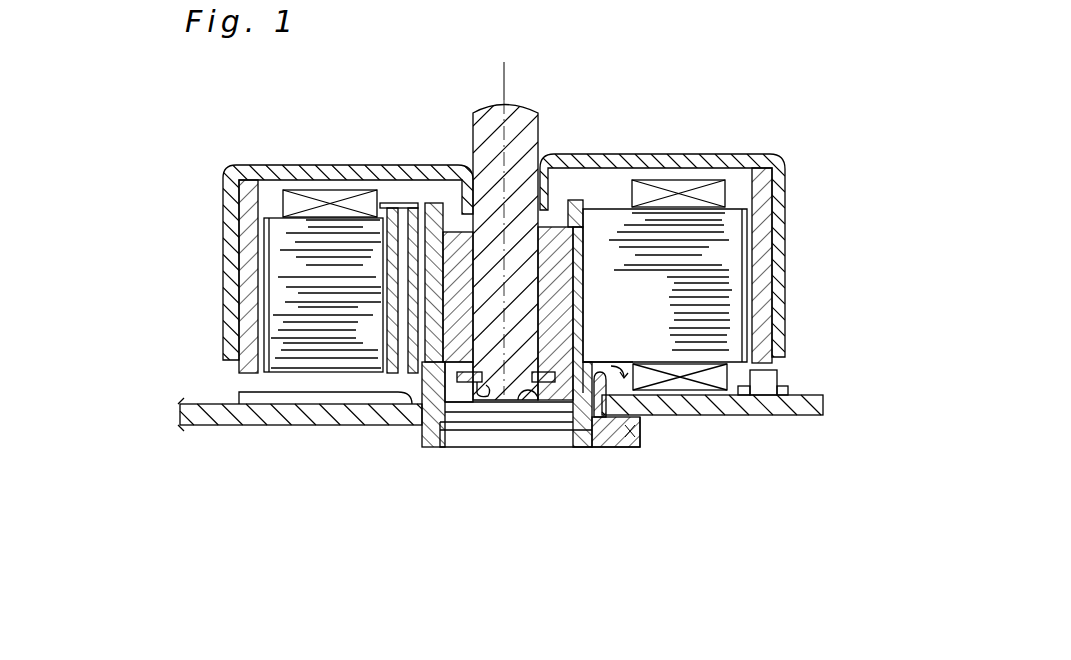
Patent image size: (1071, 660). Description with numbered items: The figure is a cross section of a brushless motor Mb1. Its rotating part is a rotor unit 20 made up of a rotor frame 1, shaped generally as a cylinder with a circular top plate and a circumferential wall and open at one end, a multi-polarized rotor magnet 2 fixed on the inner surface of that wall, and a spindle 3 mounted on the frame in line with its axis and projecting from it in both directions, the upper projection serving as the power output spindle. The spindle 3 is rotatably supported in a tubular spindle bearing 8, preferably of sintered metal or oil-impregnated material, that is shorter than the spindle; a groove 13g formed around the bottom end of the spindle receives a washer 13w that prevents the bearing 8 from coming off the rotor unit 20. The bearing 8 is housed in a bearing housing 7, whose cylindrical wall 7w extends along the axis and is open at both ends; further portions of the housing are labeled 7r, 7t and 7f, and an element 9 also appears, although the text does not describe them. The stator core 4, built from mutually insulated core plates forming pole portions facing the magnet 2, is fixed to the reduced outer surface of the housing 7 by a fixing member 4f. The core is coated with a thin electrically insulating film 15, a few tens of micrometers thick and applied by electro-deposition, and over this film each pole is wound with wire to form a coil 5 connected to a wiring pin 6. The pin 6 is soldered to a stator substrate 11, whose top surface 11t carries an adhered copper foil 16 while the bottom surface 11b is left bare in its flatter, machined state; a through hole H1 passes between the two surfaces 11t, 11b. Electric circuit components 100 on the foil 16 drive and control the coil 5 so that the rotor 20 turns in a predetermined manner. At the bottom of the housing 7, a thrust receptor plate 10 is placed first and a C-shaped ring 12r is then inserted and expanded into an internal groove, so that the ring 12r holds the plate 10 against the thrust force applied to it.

The rotor frame 1 is at (690, 154).
The multi-polarized magnet 2 is at (763, 154).
The spindle 3 is at (541, 113).
The stator core 4 is at (360, 240).
The fixing member 4f is at (413, 205).
The coil 5 is at (297, 196).
The wiring pin 6 is at (268, 402).
The bearing housing 7 is at (602, 437).
The engaging projection of bearing holder 7r is at (600, 365).
The tip of bearing holder 7t is at (628, 412).
The cylindrical wall 7w is at (420, 441).
The flange of bearing holder 7f is at (637, 445).
The spindle bearing 8 is at (457, 237).
The thrust bearing 9 is at (545, 437).
The thrust receptor plate 10 is at (505, 432).
The stator substrate 11 is at (357, 418).
The top surface 11t is at (180, 420).
The bottom surface 11b is at (806, 418).
The C-shaped ring 12r is at (478, 437).
The groove 13g is at (458, 440).
The washer 13w is at (457, 440).
The thin film 15 is at (737, 200).
The copper foil 16 is at (200, 407).
The rotor unit 20 is at (765, 52).
The electric circuit components 100 is at (772, 373).
The through hole H1 is at (650, 420).
The brushless motor Mb1 is at (805, 89).